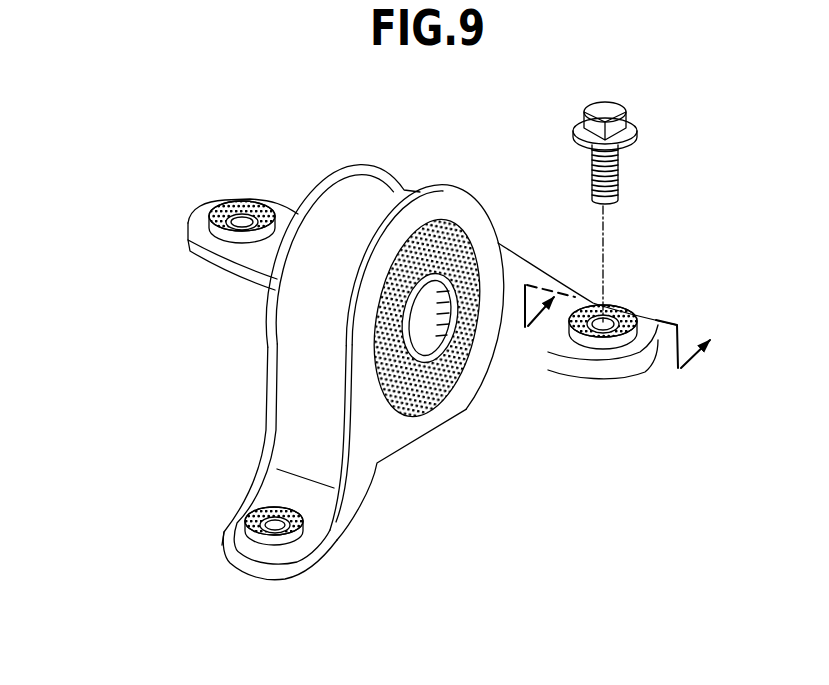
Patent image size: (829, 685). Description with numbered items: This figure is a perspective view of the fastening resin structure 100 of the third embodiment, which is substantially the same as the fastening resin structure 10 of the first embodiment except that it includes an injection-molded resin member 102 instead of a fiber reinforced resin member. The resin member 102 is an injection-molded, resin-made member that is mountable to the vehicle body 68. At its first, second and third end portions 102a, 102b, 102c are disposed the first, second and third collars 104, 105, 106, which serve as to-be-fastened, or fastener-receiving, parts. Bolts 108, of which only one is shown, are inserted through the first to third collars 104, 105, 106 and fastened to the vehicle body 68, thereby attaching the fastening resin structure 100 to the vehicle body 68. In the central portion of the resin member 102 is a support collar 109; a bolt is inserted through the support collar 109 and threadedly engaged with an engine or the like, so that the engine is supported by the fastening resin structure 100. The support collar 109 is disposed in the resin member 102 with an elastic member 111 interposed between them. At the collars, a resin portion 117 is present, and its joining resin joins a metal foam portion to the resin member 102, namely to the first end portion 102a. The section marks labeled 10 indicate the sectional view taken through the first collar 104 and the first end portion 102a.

The fastening resin structure 100 is at (186, 179).
The resin member 102 is at (337, 162).
The first end portion 102a is at (665, 324).
The second end portion 102b is at (198, 227).
The third end portion 102c is at (246, 547).
The first collar 104 is at (615, 312).
The second collar 105 is at (245, 217).
The third collar 106 is at (305, 532).
The bolt 108 is at (607, 103).
The support collar 109 is at (445, 350).
The elastic member 111 is at (447, 247).
The resin portion 117 is at (243, 236).
The vehicle body 68 is at (540, 418).
The fastening resin structure 10 is at (605, 357).